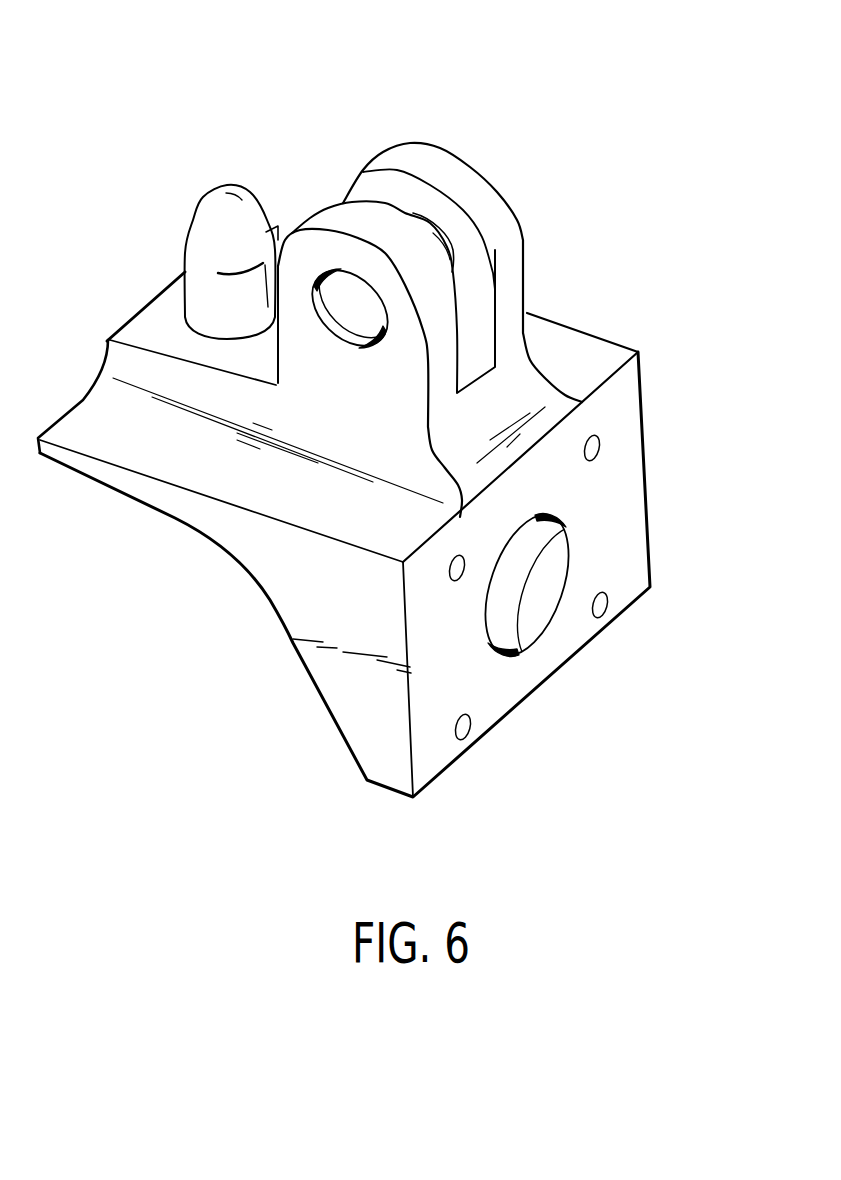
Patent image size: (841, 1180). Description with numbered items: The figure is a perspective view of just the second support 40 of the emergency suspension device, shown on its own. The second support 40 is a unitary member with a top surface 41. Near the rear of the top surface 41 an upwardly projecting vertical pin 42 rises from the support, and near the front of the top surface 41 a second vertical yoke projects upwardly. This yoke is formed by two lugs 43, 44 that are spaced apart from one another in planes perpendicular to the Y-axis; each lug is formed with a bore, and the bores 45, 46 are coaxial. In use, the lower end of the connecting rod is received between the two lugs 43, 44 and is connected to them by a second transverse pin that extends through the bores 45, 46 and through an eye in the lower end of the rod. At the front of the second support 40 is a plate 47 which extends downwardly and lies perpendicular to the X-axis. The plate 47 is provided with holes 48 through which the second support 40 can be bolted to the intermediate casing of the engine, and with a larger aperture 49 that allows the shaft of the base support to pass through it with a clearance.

The second support 40 is at (622, 301).
The top surface 41 is at (150, 320).
The vertical pin 42 is at (215, 203).
The lug 43 is at (330, 217).
The lug 44 is at (423, 157).
The bore 45 is at (337, 323).
The bore 46 is at (453, 236).
The plate 47 is at (628, 518).
The holes 48 is at (600, 447).
The aperture 49 is at (515, 592).